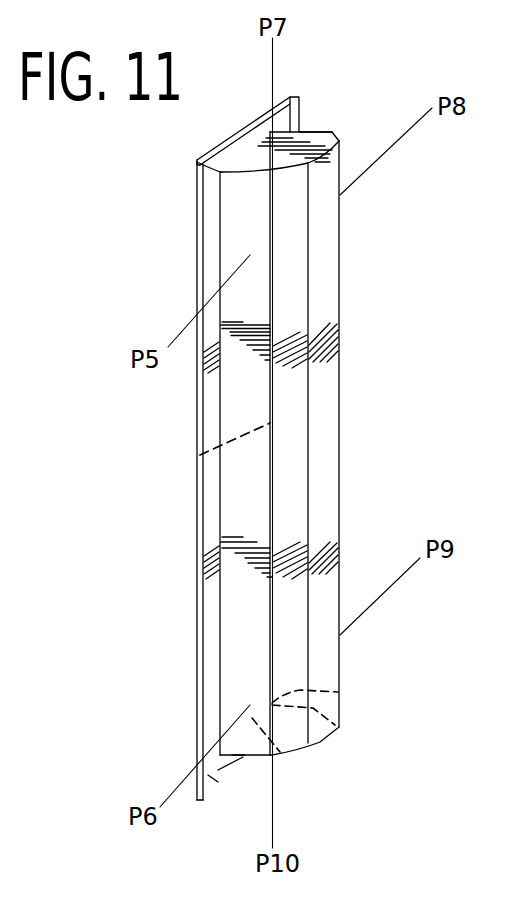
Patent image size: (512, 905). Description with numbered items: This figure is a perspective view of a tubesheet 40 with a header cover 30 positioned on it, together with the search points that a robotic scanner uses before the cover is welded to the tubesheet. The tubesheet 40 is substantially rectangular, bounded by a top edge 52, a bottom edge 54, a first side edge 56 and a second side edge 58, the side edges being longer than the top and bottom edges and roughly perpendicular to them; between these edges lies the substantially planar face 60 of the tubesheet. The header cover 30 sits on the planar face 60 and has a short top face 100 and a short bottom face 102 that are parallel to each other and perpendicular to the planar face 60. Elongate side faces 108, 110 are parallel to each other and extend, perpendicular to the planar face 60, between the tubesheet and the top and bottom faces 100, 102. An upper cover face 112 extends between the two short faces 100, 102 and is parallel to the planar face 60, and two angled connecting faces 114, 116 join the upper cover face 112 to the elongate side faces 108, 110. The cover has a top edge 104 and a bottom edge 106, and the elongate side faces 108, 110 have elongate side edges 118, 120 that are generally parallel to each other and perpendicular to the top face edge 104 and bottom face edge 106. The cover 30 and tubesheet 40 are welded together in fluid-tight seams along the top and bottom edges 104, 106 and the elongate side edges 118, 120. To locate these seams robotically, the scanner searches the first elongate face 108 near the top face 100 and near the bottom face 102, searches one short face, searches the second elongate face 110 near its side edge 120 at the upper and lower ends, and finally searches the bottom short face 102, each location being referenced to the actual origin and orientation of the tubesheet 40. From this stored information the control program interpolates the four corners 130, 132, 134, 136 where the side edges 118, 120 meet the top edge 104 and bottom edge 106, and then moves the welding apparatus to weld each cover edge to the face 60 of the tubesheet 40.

The header cover 30 is at (339, 375).
The tubesheet 40 is at (218, 782).
The top edge 52 is at (222, 152).
The bottom edge 54 is at (238, 760).
The first side edge 56 is at (200, 498).
The second side edge 58 is at (303, 113).
The planar face 60 is at (213, 205).
The top face 100 is at (253, 160).
The bottom face 102 is at (320, 742).
The top edge 104 is at (230, 163).
The bottom edge 106 is at (280, 755).
The elongate side face 108 is at (243, 378).
The elongate side face 110 is at (310, 128).
The upper cover face 112 is at (318, 512).
The angled connecting face 114 is at (283, 230).
The angled connecting face 116 is at (340, 140).
The elongate side edge 118 is at (218, 517).
The elongate side edge 120 is at (200, 454).
The corner 130 is at (221, 172).
The corner 132 is at (272, 160).
The corner 134 is at (218, 770).
The corner 136 is at (338, 692).